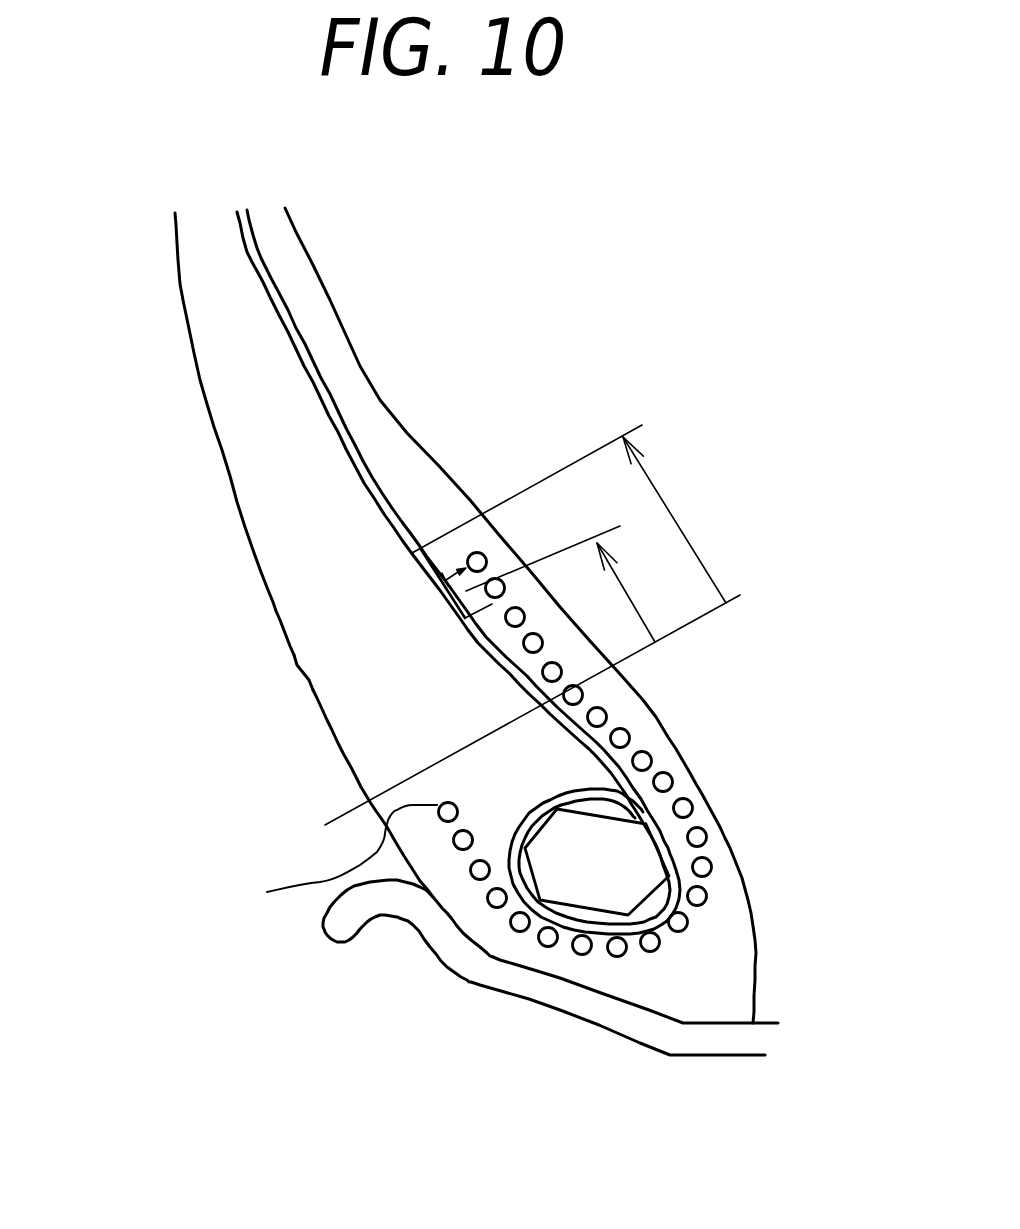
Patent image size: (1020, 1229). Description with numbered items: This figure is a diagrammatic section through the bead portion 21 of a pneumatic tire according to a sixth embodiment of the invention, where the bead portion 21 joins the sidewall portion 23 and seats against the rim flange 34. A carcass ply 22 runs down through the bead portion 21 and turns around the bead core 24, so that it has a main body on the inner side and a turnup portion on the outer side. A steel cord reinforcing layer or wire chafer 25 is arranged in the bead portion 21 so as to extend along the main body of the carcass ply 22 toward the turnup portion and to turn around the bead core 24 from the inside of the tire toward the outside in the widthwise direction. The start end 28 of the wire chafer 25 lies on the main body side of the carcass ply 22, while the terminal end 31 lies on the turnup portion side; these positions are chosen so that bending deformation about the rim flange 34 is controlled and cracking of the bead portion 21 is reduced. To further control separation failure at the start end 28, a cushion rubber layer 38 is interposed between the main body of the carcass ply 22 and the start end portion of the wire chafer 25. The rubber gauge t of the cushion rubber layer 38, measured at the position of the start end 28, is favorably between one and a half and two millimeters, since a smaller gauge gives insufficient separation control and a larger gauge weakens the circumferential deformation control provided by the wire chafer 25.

The bead portion 21 is at (752, 897).
The carcass ply 22 is at (291, 336).
The sidewall portion 23 is at (180, 303).
The bead core 24 is at (600, 873).
The steel cord reinforcing layer or wire chafer 25 is at (620, 738).
The start end 28 is at (470, 550).
The terminal end 31 is at (330, 861).
The rim flange 34 is at (395, 900).
The cushion rubber layer 38 is at (510, 558).
The rubber gauge t is at (450, 567).